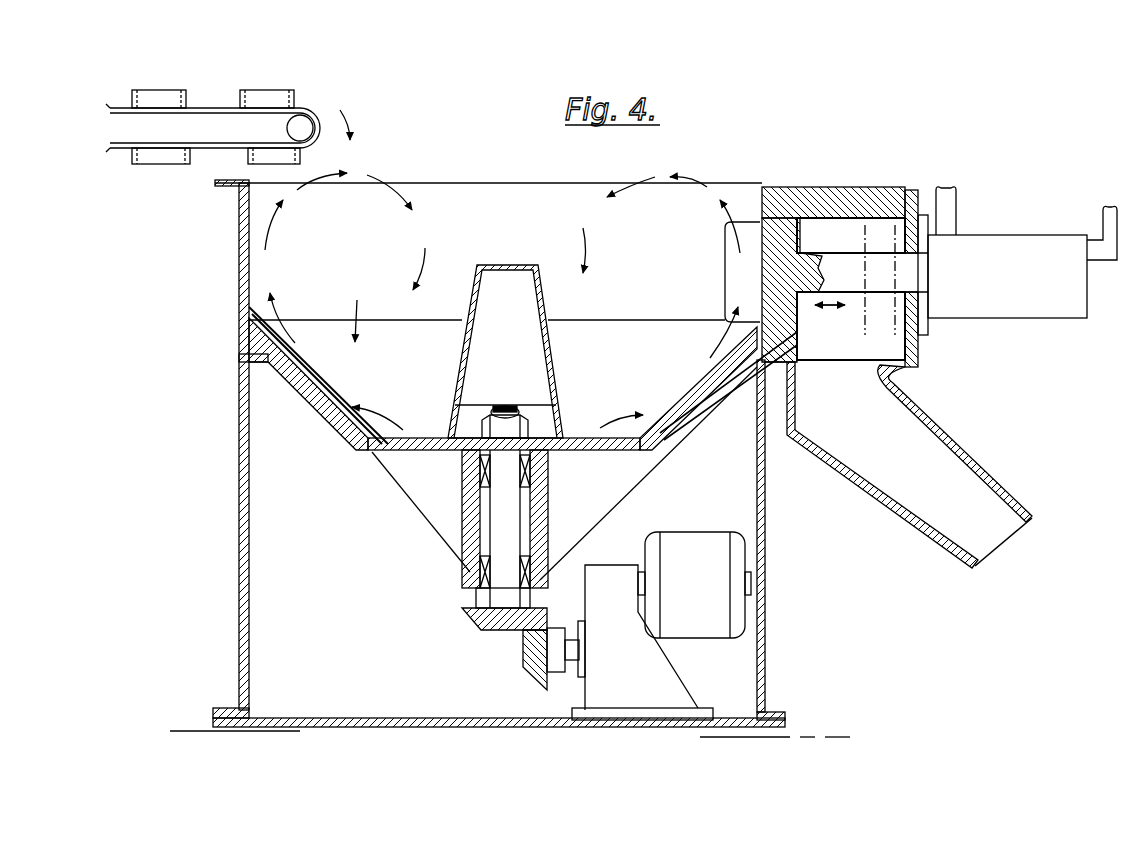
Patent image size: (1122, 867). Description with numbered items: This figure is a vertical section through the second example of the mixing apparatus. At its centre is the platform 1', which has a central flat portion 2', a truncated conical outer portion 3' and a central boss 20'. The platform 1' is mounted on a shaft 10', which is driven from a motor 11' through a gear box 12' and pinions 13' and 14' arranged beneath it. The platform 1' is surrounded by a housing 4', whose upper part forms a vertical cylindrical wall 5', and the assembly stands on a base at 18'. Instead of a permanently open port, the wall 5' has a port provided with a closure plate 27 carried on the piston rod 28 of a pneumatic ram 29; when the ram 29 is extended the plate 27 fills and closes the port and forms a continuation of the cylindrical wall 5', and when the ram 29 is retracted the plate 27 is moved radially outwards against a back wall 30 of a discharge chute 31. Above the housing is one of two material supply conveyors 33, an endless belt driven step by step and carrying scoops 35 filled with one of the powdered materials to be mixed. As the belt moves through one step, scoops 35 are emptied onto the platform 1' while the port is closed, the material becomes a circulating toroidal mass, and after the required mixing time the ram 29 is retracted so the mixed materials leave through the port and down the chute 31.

The platform 1' is at (502, 301).
The central flat portion 2' is at (551, 473).
The truncated conical outer portion 3' is at (523, 378).
The housing 4' is at (787, 536).
The vertical cylindrical wall 5' is at (227, 445).
The shaft 10' is at (466, 507).
The motor 11' is at (694, 567).
The gear box 12' is at (653, 642).
The pinion 13' is at (519, 655).
The pinion 14' is at (478, 609).
The base plate 18' is at (510, 713).
The central boss 20' is at (528, 351).
The closure plate 27 is at (780, 228).
The piston rod 28 is at (845, 262).
The pneumatic ram 29 is at (1021, 250).
The back wall 30 is at (911, 193).
The discharge chute 31 is at (965, 456).
The material supply conveyor 33 is at (205, 150).
The scoop 35 is at (243, 98).